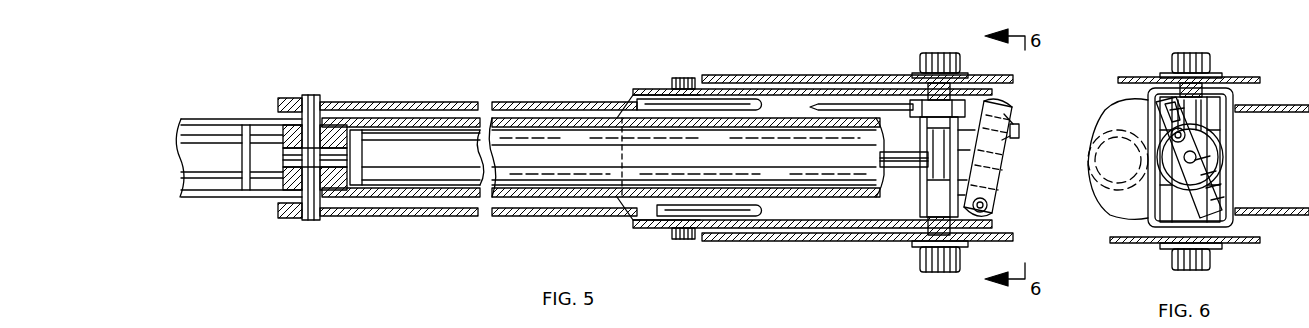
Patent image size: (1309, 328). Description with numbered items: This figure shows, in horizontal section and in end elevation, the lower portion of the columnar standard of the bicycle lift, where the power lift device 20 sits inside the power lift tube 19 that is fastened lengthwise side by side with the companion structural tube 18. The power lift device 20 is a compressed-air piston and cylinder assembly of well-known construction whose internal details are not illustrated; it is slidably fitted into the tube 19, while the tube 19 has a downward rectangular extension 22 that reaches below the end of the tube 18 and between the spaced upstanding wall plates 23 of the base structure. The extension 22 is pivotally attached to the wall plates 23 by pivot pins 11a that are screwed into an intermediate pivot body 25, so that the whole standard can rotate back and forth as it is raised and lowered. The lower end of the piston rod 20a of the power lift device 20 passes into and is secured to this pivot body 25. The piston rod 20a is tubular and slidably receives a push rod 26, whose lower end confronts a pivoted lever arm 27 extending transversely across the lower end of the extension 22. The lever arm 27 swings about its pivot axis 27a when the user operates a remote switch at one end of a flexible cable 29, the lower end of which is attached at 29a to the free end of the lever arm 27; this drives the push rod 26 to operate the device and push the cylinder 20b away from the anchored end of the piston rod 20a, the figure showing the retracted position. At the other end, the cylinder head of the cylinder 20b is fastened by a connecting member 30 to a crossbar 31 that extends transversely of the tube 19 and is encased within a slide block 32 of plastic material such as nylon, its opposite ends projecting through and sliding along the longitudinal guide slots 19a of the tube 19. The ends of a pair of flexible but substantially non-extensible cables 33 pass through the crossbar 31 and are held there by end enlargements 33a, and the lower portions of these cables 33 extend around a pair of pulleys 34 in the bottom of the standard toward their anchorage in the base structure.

In FIG. 5, the pivot pins 11a is at (935, 54).
In FIG. 6, the pivot pins 11a is at (1190, 54).
In FIG. 6, the structural tube 18 is at (1100, 124).
In FIG. 5, the power lift tube 19 is at (546, 118).
In FIG. 6, the power lift tube 19 is at (1226, 157).
In FIG. 5, the longitudinal guide slots 19a is at (196, 118).
In FIG. 5, the power lift device 20 is at (654, 156).
In FIG. 5, the piston rod 20a is at (905, 167).
In FIG. 6, the piston rod 20a is at (1216, 146).
In FIG. 5, the cylinder 20b is at (404, 135).
In FIG. 5, the rectangular extension 22 is at (796, 75).
In FIG. 6, the rectangular extension 22 is at (1149, 157).
In FIG. 6, the upstanding wall plates 23 is at (1240, 77).
In FIG. 5, the intermediate pivot body 25 is at (930, 190).
In FIG. 6, the intermediate pivot body 25 is at (1174, 200).
In FIG. 5, the push rod 26 is at (1004, 150).
In FIG. 6, the push rod 26 is at (1152, 160).
In FIG. 5, the lever arm 27 is at (998, 160).
In FIG. 6, the lever arm 27 is at (1226, 170).
In FIG. 5, the pivot axis 27a is at (988, 205).
In FIG. 6, the pivot axis 27a is at (1228, 192).
In FIG. 5, the flexible cable 29 is at (840, 104).
In FIG. 6, the flexible cable 29 is at (1172, 102).
In FIG. 5, the cable attachment 29a is at (1018, 125).
In FIG. 6, the cable attachment 29a is at (1172, 132).
In FIG. 5, the connecting member 30 is at (332, 160).
In FIG. 5, the crossbar 31 is at (318, 116).
In FIG. 5, the slide block 32 is at (264, 137).
In FIG. 5, the cables 33 is at (466, 102).
In FIG. 5, the end enlargements 33a is at (286, 98).
In FIG. 5, the pulleys 34 is at (640, 95).
In FIG. 6, the pulleys 34 is at (1290, 105).